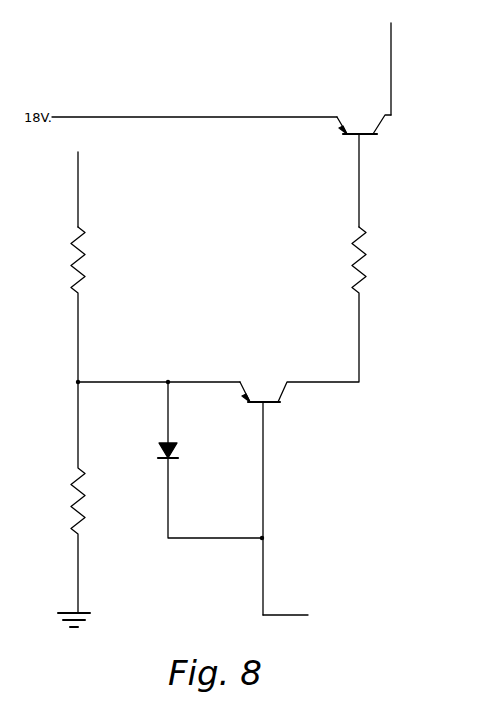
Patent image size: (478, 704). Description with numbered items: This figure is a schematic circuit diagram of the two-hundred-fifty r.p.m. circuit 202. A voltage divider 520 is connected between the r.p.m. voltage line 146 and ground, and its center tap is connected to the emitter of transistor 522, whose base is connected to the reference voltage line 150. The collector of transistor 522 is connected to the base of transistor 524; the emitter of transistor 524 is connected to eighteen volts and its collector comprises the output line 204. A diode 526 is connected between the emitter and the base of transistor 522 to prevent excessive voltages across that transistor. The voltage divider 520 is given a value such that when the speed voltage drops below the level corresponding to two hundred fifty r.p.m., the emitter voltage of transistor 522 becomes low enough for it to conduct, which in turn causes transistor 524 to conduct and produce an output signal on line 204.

The output line 204 is at (391, 48).
The transistor 524 is at (346, 143).
The r.p.m. voltage line 146 is at (78, 197).
The voltage divider 520 is at (78, 321).
The transistor 522 is at (270, 404).
The diode 526 is at (178, 447).
The 250 r.p.m. circuit 202 is at (308, 497).
The reference voltage line 150 is at (282, 614).